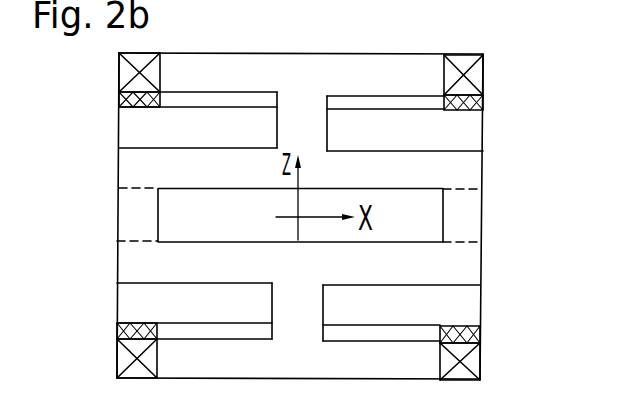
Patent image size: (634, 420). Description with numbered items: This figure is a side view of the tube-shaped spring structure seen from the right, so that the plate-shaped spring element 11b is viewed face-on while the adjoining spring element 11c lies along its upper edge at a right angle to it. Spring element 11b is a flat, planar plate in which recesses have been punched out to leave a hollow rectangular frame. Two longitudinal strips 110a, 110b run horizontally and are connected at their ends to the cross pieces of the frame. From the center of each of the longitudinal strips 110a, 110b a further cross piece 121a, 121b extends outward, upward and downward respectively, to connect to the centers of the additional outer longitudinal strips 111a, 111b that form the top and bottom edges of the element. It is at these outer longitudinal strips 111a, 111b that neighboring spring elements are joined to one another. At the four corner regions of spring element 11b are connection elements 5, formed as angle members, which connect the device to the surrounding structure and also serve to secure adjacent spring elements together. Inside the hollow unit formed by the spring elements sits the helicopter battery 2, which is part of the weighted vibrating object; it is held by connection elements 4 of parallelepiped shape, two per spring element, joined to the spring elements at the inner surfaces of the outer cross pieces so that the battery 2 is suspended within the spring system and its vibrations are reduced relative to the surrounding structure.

The battery 2 is at (145, 129).
The connection elements 4 is at (480, 100).
The connection elements 5 is at (128, 75).
The spring element 11b is at (500, 139).
The spring element 11c is at (338, 9).
The longitudinal strip 110a is at (400, 184).
The longitudinal strip 110b is at (383, 270).
The longitudinal strip 111a is at (398, 90).
The longitudinal strip 111b is at (422, 418).
The cross piece 121a is at (322, 129).
The cross piece 121b is at (293, 317).